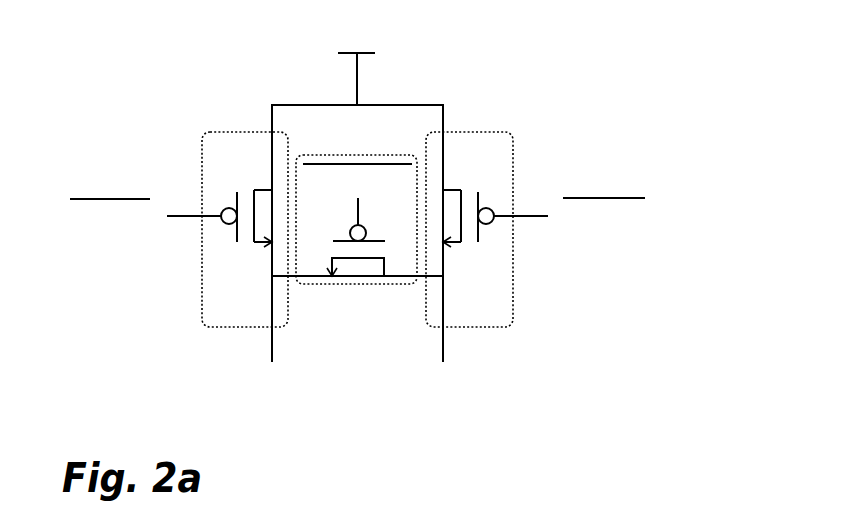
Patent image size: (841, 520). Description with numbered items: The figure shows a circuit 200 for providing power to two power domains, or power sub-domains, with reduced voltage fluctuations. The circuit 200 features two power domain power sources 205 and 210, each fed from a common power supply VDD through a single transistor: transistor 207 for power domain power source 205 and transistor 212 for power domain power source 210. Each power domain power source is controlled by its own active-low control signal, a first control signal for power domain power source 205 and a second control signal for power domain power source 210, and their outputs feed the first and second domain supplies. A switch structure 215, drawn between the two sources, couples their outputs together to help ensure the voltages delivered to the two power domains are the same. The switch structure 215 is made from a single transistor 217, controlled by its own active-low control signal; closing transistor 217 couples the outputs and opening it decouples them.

The circuit 200 is at (141, 66).
The power domain power source 205 is at (213, 131).
The transistor 207 is at (256, 189).
The power domain power source 210 is at (496, 131).
The transistor 212 is at (455, 189).
The switch structure 215 is at (353, 155).
The transistor 217 is at (358, 262).